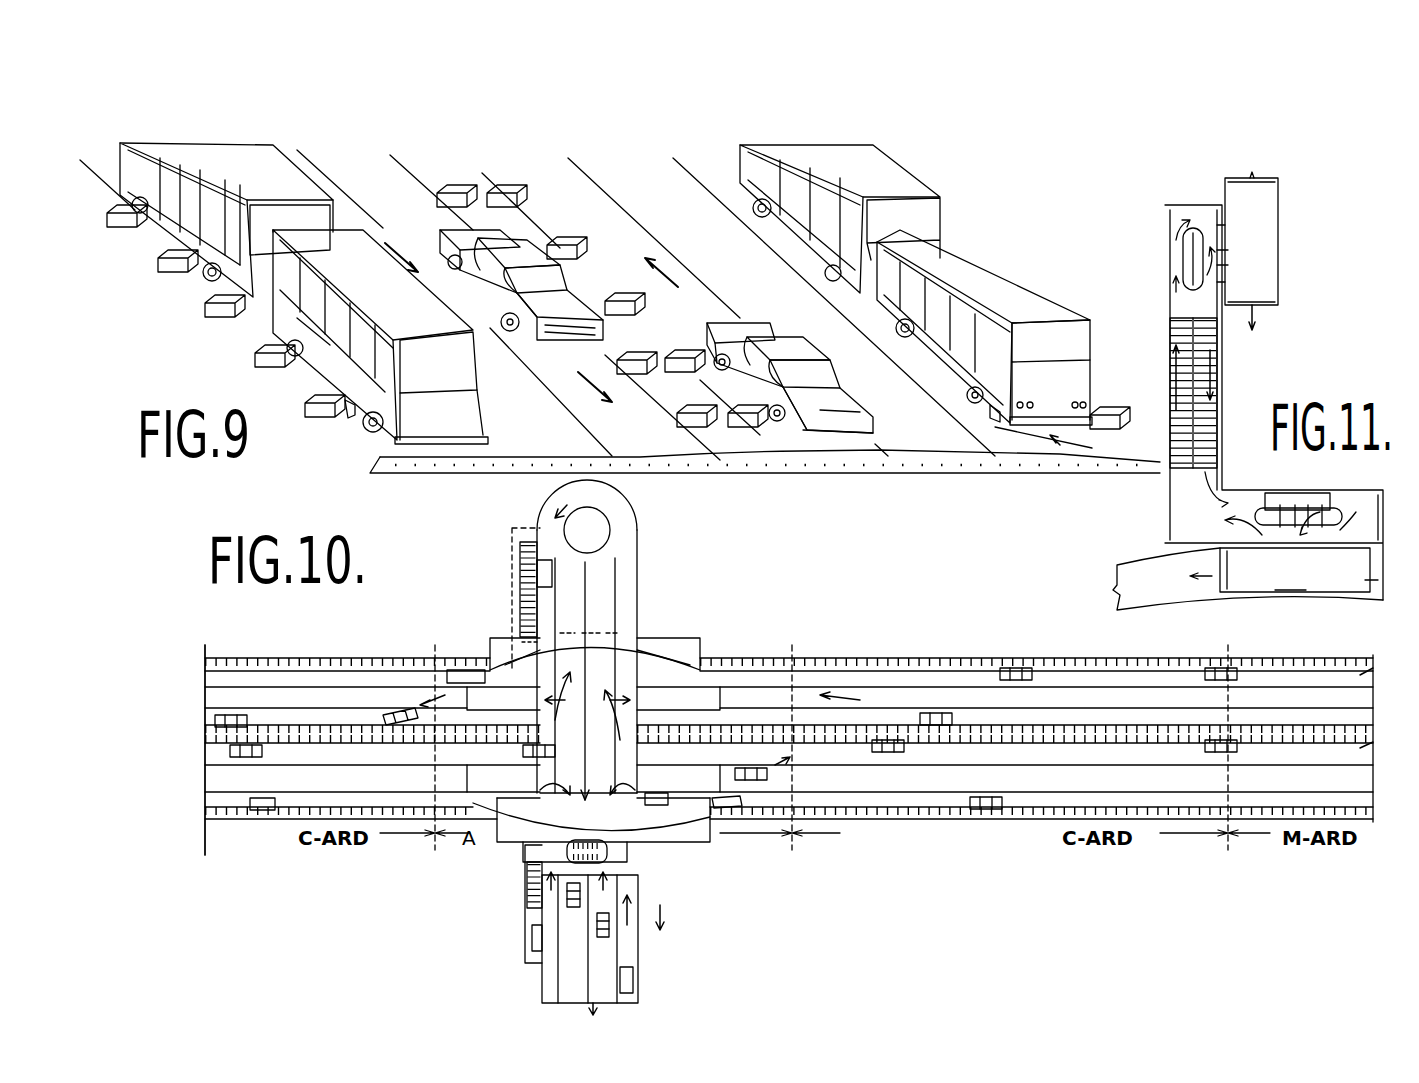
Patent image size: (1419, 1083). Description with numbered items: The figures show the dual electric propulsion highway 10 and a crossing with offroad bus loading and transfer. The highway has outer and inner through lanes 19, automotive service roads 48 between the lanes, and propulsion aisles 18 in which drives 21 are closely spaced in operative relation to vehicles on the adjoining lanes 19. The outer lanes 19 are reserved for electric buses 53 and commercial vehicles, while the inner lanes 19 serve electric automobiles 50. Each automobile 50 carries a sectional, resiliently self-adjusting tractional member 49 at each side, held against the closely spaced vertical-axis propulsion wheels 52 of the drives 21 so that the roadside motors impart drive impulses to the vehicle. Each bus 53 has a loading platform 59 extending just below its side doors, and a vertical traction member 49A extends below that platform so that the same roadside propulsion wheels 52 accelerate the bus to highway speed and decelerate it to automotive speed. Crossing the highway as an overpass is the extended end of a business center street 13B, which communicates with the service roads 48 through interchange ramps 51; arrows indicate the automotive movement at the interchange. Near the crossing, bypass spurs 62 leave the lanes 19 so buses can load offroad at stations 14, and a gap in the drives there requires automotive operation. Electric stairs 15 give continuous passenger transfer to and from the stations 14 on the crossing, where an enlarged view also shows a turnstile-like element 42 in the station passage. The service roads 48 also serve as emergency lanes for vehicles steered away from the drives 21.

In FIG. 10, the peripheral highway 10 is at (185, 789).
In FIG. 10, the business center street 13B is at (618, 542).
In FIG. 10, the station 14 is at (522, 548).
In FIG. 11, the station 14 is at (1165, 220).
In FIG. 10, the electric stairs 15 is at (522, 592).
In FIG. 11, the electric stairs 15 is at (1217, 355).
In FIG. 9, the propulsion aisle 18 is at (752, 455).
In FIG. 10, the propulsion aisle 18 is at (215, 733).
In FIG. 9, the lane 19 is at (442, 455).
In FIG. 10, the lane 19 is at (215, 680).
In FIG. 9, the drive 21 is at (265, 335).
In FIG. 10, the drive 21 is at (215, 660).
In FIG. 11, the turnstile 42 is at (1293, 512).
In FIG. 9, the automotive service road 48 is at (518, 455).
In FIG. 10, the automotive service road 48 is at (789, 737).
In FIG. 9, the tractional member 49 is at (455, 260).
In FIG. 9, the vertical traction member 49A is at (352, 420).
In FIG. 9, the electric automobile 50 is at (545, 333).
In FIG. 10, the electric automobile 50 is at (265, 753).
In FIG. 10, the interchange ramp 51 is at (482, 778).
In FIG. 9, the propulsion wheel 52 is at (520, 193).
In FIG. 9, the electric bus 53 is at (205, 285).
In FIG. 10, the electric bus 53 is at (458, 670).
In FIG. 11, the electric bus 53 is at (1272, 253).
In FIG. 9, the loading platform 59 is at (165, 238).
In FIG. 10, the bypass spur 62 is at (672, 660).